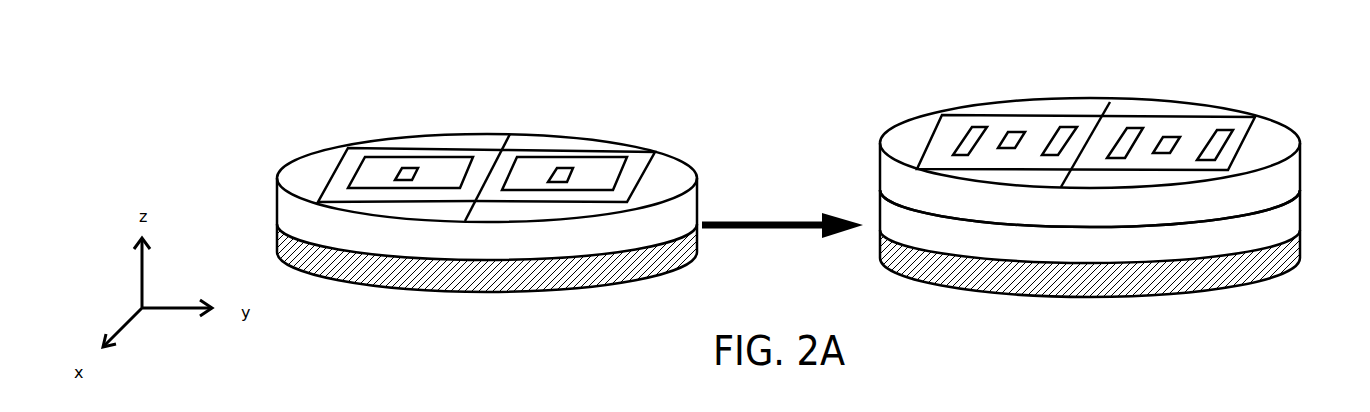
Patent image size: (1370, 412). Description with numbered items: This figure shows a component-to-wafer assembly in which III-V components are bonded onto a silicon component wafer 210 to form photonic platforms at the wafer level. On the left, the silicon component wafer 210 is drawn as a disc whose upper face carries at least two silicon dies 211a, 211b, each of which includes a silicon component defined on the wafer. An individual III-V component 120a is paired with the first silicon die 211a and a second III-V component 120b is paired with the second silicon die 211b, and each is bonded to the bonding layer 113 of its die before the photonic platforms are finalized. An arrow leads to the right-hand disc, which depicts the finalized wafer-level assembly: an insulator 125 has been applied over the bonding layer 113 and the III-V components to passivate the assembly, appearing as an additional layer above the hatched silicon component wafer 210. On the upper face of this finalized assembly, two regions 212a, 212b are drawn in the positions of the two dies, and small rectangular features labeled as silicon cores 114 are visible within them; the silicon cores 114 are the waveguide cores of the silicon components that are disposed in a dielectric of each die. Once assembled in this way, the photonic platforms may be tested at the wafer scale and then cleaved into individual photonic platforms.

The bonding layer 113 is at (288, 173).
The silicon core 114 is at (1057, 140).
The III-V component 120a is at (370, 170).
The III-V component 120b is at (600, 164).
The insulator 125 is at (890, 168).
The silicon component wafer 210 is at (276, 252).
The silicon die 211a is at (432, 148).
The silicon die 211b is at (529, 148).
The first upper plate region 212a is at (950, 121).
The second upper plate region 212b is at (1242, 136).